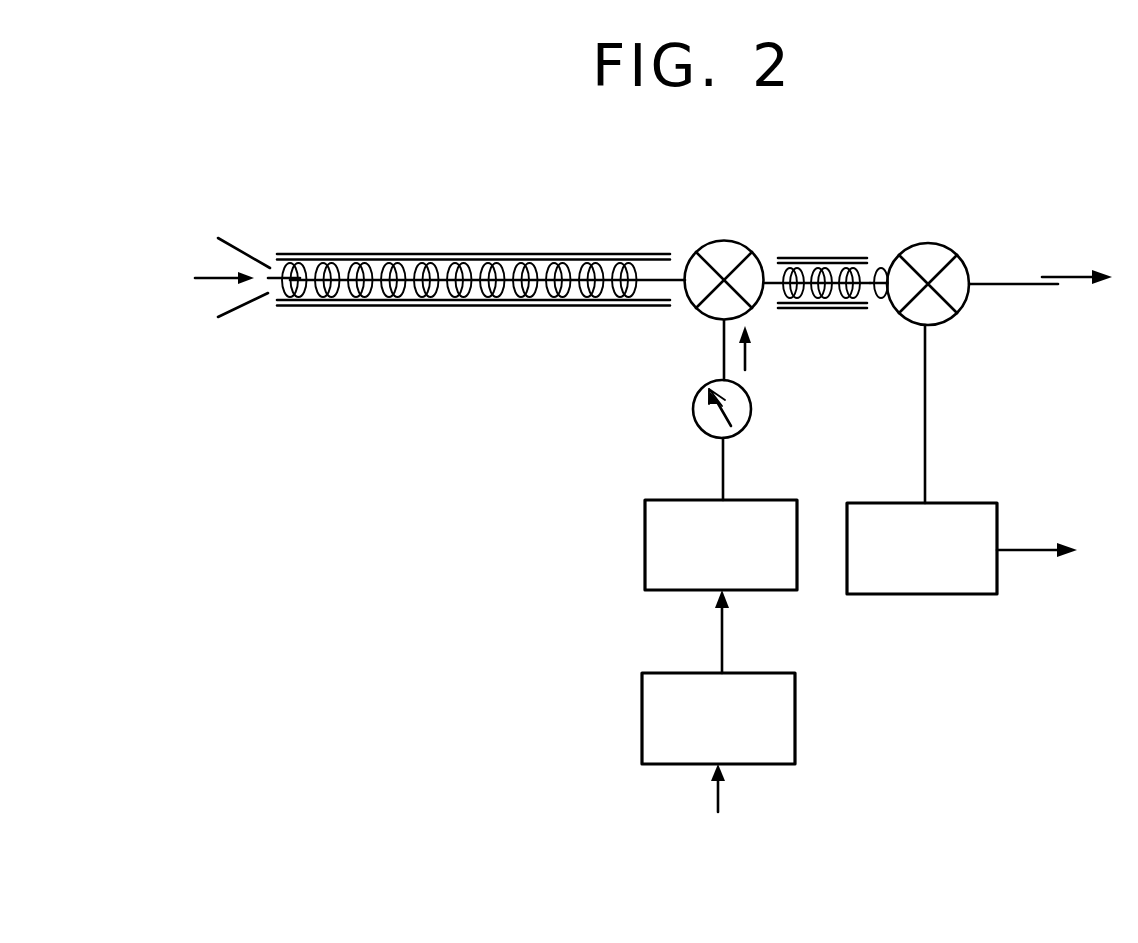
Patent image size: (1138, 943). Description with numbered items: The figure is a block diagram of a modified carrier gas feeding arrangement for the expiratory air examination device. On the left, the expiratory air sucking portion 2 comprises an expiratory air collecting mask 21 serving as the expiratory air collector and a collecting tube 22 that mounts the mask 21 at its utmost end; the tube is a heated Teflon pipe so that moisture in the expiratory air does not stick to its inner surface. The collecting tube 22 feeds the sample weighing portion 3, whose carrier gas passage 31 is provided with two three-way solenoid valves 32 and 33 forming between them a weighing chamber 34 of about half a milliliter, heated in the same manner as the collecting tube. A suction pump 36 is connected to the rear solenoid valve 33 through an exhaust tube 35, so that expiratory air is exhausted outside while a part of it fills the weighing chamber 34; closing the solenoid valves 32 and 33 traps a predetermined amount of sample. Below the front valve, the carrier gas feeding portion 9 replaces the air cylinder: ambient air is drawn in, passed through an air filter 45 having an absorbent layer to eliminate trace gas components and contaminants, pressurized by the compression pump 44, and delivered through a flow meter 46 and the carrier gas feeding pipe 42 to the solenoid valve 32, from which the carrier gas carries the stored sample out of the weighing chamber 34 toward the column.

The expiratory air sucking portion 2 is at (268, 250).
The expiratory air collecting mask 21 is at (232, 308).
The collecting tube 22 is at (457, 250).
The sample weighing portion 3 is at (803, 221).
The carrier gas passage 31 is at (710, 344).
The three-way solenoid valve 32 is at (717, 241).
The three-way solenoid valve 33 is at (937, 252).
The weighing chamber 34 is at (840, 257).
The exhaust tube 35 is at (925, 412).
The suction pump 36 is at (978, 582).
The carrier gas feeding pipe 42 is at (720, 463).
The compression pump 44 is at (785, 738).
The air filter 45 is at (652, 575).
The flow meter 46 is at (738, 412).
The carrier gas feeding portion 9 is at (572, 492).